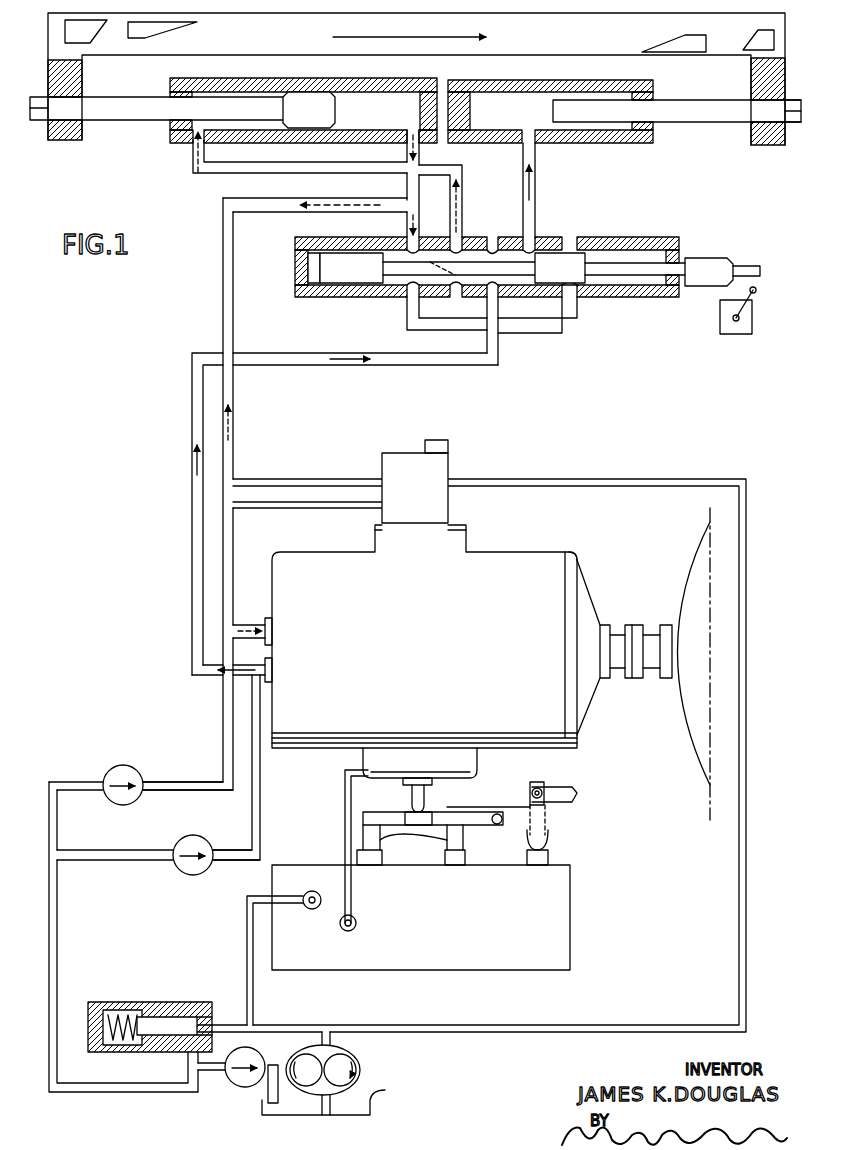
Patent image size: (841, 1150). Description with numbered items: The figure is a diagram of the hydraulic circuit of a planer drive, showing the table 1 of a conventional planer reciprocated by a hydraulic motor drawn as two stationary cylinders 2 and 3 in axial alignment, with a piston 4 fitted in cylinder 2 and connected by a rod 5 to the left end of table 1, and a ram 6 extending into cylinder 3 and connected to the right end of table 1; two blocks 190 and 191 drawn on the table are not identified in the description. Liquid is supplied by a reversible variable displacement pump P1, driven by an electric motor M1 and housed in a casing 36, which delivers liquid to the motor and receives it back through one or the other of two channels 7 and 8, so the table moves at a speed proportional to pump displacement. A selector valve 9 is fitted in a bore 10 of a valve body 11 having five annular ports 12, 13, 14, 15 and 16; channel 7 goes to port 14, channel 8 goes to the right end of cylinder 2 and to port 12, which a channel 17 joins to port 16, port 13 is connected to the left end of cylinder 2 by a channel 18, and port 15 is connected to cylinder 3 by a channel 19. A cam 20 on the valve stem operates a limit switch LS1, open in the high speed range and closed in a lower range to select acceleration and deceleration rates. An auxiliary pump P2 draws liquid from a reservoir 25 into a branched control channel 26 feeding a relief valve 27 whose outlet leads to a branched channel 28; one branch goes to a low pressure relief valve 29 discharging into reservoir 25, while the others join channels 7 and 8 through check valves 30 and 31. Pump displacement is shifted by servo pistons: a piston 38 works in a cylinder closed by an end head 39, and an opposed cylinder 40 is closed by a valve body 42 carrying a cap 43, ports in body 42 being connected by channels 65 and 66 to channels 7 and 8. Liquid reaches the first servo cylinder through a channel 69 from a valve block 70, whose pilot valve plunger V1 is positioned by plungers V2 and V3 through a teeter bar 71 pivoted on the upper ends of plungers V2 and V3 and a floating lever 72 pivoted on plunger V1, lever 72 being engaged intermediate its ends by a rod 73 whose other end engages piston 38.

The table 1 is at (281, 49).
The cylinder 2 is at (170, 128).
The cylinder 3 is at (653, 138).
The piston 4 is at (313, 119).
The rod 5 is at (130, 90).
The ram 6 is at (713, 100).
The channel 7 is at (482, 368).
The channel 8 is at (364, 200).
The selector valve 9 is at (352, 279).
The bore 10 is at (605, 285).
The valve body 11 is at (622, 237).
The port 12 is at (402, 235).
The port 13 is at (420, 297).
The port 14 is at (500, 235).
The port 15 is at (560, 297).
The port 16 is at (552, 240).
The channel 17 is at (570, 328).
The channel 18 is at (218, 176).
The channel 19 is at (536, 192).
The cam 20 is at (692, 262).
The reservoir 25 is at (380, 1097).
The control channel 26 is at (644, 478).
The relief valve 27 is at (172, 1002).
The channel 28 is at (233, 805).
The low pressure relief valve 29 is at (240, 1086).
The check valve 30 is at (183, 838).
The check valve 31 is at (113, 758).
The casing 36 is at (527, 552).
The piston 38 is at (438, 735).
The end head 39 is at (477, 774).
The cylinder 40 is at (462, 540).
The valve body 42 is at (448, 508).
The cap 43 is at (449, 450).
The channel 65 is at (332, 510).
The channel 66 is at (322, 478).
The channel 69 is at (343, 807).
The valve block 70 is at (442, 941).
The teeter bar 71 is at (488, 806).
The floating lever 72 is at (418, 826).
The rod 73 is at (410, 798).
The frame guide block 190 is at (178, 30).
The frame guide block 191 is at (660, 42).
The reversible variable displacement pump P1 is at (426, 640).
The auxiliary pump P2 is at (362, 1066).
The electric motor M1 is at (690, 568).
The pilot valve plunger V1 is at (363, 866).
The plunger V2 is at (452, 866).
The plunger V3 is at (550, 855).
The limit switch LS1 is at (746, 334).